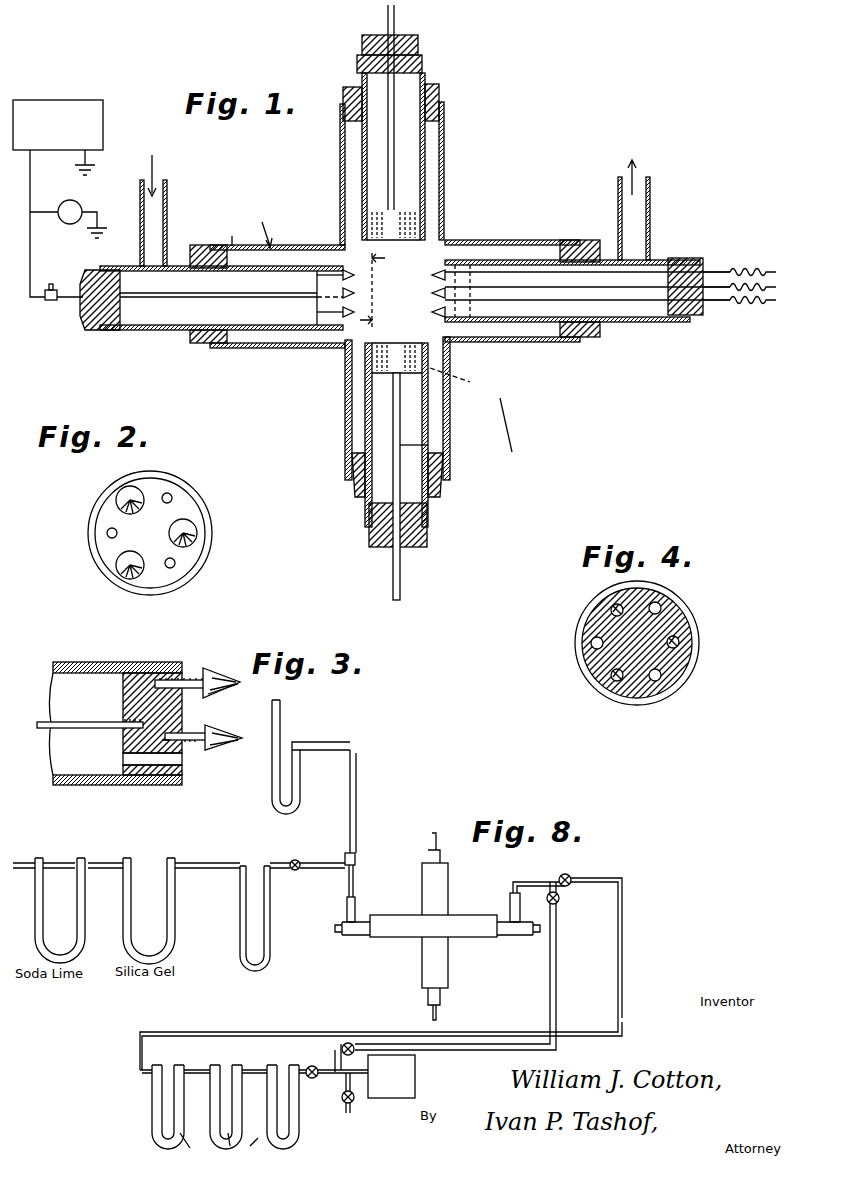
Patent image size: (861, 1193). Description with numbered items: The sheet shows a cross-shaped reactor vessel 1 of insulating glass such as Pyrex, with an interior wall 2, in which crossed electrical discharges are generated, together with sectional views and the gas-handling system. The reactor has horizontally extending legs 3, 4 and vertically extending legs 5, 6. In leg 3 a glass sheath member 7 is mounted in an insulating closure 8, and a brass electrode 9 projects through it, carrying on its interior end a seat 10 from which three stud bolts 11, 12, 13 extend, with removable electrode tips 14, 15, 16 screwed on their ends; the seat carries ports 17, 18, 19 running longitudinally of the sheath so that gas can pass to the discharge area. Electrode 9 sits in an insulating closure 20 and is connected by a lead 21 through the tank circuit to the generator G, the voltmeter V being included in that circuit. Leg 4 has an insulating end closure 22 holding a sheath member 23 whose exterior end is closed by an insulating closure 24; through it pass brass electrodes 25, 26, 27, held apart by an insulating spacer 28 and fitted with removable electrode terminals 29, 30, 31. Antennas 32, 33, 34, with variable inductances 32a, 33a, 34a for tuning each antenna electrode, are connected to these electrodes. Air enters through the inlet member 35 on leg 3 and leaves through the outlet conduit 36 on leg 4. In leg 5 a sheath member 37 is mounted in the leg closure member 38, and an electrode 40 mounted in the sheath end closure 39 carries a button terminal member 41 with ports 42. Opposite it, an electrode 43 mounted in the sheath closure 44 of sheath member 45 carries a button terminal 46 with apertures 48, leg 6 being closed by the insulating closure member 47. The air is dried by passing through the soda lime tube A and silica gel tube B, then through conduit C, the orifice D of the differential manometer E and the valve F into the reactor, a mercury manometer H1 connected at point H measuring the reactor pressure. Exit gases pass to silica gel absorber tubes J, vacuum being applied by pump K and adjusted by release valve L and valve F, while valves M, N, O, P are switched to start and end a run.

In FIG. 1, the reactor vessel 1 is at (262, 232).
In FIG. 8, the reactor vessel 1 is at (448, 884).
In FIG. 1, the interior wall 2 is at (287, 226).
In FIG. 1, the horizontally extending leg 3 is at (397, 297).
In FIG. 1, the horizontally extending leg 4 is at (528, 240).
In FIG. 1, the vertically extending leg 5 is at (445, 142).
In FIG. 1, the vertically extending leg 6 is at (450, 418).
In FIG. 1, the sheath member 7 is at (245, 348).
In FIG. 2, the sheath member 7 is at (90, 506).
In FIG. 3, the sheath member 7 is at (65, 664).
In FIG. 1, the insulating closure 8 is at (200, 343).
In FIG. 1, the brass electrode 9 is at (160, 298).
In FIG. 3, the brass electrode 9 is at (60, 725).
In FIG. 1, the seat 10 is at (316, 278).
In FIG. 3, the seat 10 is at (122, 698).
In FIG. 1, the stud bolt 11 is at (318, 266).
In FIG. 3, the stud bolt 11 is at (188, 680).
In FIG. 1, the stud bolt 12 is at (318, 295).
In FIG. 3, the stud bolt 12 is at (200, 735).
In FIG. 1, the stud bolt 13 is at (335, 300).
In FIG. 1, the electrode tip 14 is at (349, 272).
In FIG. 2, the electrode tip 14 is at (136, 488).
In FIG. 3, the electrode tip 14 is at (212, 672).
In FIG. 1, the electrode tip 15 is at (322, 318).
In FIG. 2, the electrode tip 15 is at (194, 528).
In FIG. 3, the electrode tip 15 is at (228, 742).
In FIG. 1, the electrode tip 16 is at (332, 330).
In FIG. 2, the electrode tip 16 is at (120, 570).
In FIG. 2, the port 17 is at (170, 496).
In FIG. 2, the port 18 is at (107, 534).
In FIG. 2, the port 19 is at (175, 563).
In FIG. 3, the port 19 is at (170, 760).
In FIG. 1, the insulating closure 20 is at (85, 326).
In FIG. 1, the lead 21 is at (32, 260).
In FIG. 1, the insulating end closure 22 is at (590, 240).
In FIG. 1, the sheath member 23 is at (540, 260).
In FIG. 4, the sheath member 23 is at (700, 648).
In FIG. 1, the insulating closure 24 is at (688, 260).
In FIG. 1, the electrode 25 is at (660, 300).
In FIG. 4, the electrode 25 is at (612, 610).
In FIG. 1, the electrode 26 is at (630, 290).
In FIG. 4, the electrode 26 is at (613, 680).
In FIG. 1, the electrode 27 is at (615, 306).
In FIG. 4, the electrode 27 is at (673, 646).
In FIG. 1, the insulating spacer 28 is at (480, 300).
In FIG. 4, the insulating spacer 28 is at (660, 604).
In FIG. 1, the electrode terminal 29 is at (436, 272).
In FIG. 1, the electrode terminal 30 is at (436, 290).
In FIG. 1, the electrode terminal 31 is at (448, 356).
In FIG. 1, the antenna 32 is at (708, 270).
In FIG. 1, the variable inductance 32a is at (775, 268).
In FIG. 1, the antenna 33 is at (725, 285).
In FIG. 1, the variable inductance 33a is at (745, 292).
In FIG. 1, the antenna 34 is at (715, 302).
In FIG. 1, the variable inductance 34a is at (768, 304).
In FIG. 1, the inlet member 35 is at (166, 196).
In FIG. 8, the inlet member 35 is at (358, 908).
In FIG. 1, the outlet conduit 36 is at (652, 198).
In FIG. 8, the outlet conduit 36 is at (510, 904).
In FIG. 1, the sheath member 37 is at (357, 66).
In FIG. 1, the leg closure member 38 is at (440, 90).
In FIG. 1, the sheath end closure 39 is at (420, 40).
In FIG. 1, the electrode 40 is at (390, 121).
In FIG. 1, the button terminal member 41 is at (400, 210).
In FIG. 1, the ports 42 is at (425, 216).
In FIG. 1, the electrode 43 is at (428, 446).
In FIG. 1, the sheath closure 44 is at (428, 536).
In FIG. 1, the sheath member 45 is at (365, 432).
In FIG. 1, the button terminal 46 is at (372, 380).
In FIG. 1, the insulating closure member 47 is at (355, 482).
In FIG. 1, the apertures 48 is at (471, 410).
In FIG. 1, the generator G is at (62, 100).
In FIG. 1, the voltmeter V is at (84, 206).
In FIG. 8, the soda lime tube A is at (40, 876).
In FIG. 8, the silica gel tube B is at (130, 875).
In FIG. 8, the conduit C is at (208, 864).
In FIG. 8, the orifice D is at (256, 864).
In FIG. 8, the differential manometer E is at (270, 900).
In FIG. 8, the valve F is at (300, 862).
In FIG. 8, the point H is at (357, 852).
In FIG. 8, the mercury manometer H1 is at (283, 740).
In FIG. 8, the silica gel absorber tubes J is at (270, 1062).
In FIG. 8, the vacuum pump K is at (390, 1098).
In FIG. 8, the release valve L is at (348, 1110).
In FIG. 8, the valve M is at (556, 900).
In FIG. 8, the valve N is at (570, 876).
In FIG. 8, the valve O is at (348, 1042).
In FIG. 8, the valve P is at (312, 1080).